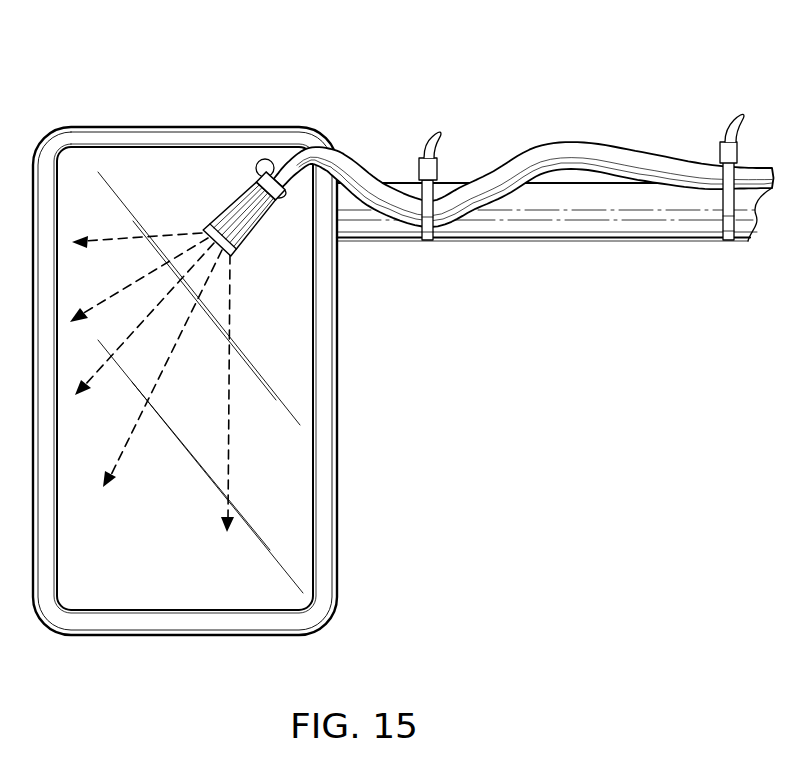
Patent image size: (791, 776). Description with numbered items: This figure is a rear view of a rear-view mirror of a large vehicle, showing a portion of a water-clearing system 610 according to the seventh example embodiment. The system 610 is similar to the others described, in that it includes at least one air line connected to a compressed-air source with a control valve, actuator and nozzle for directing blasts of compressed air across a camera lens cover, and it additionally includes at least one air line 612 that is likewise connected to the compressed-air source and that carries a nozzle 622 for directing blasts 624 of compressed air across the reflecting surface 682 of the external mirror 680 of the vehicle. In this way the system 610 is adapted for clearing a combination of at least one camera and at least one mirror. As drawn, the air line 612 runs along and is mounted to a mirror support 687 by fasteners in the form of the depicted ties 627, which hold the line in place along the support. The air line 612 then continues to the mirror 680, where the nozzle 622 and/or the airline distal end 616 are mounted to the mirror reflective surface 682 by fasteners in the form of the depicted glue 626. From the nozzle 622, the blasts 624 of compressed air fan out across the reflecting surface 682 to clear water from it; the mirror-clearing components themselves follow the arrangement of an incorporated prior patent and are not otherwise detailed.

The water-clearing system 610 is at (571, 278).
The air line 612 is at (579, 130).
The airline distal end 616 is at (277, 193).
The nozzle 622 is at (262, 255).
The blasts of compressed air 624 is at (228, 467).
The fasteners (glue) 626 is at (267, 158).
The fasteners (ties) 627 is at (440, 132).
The external mirror 680 is at (355, 553).
The reflecting surface 682 is at (137, 175).
The mirror support 687 is at (610, 215).